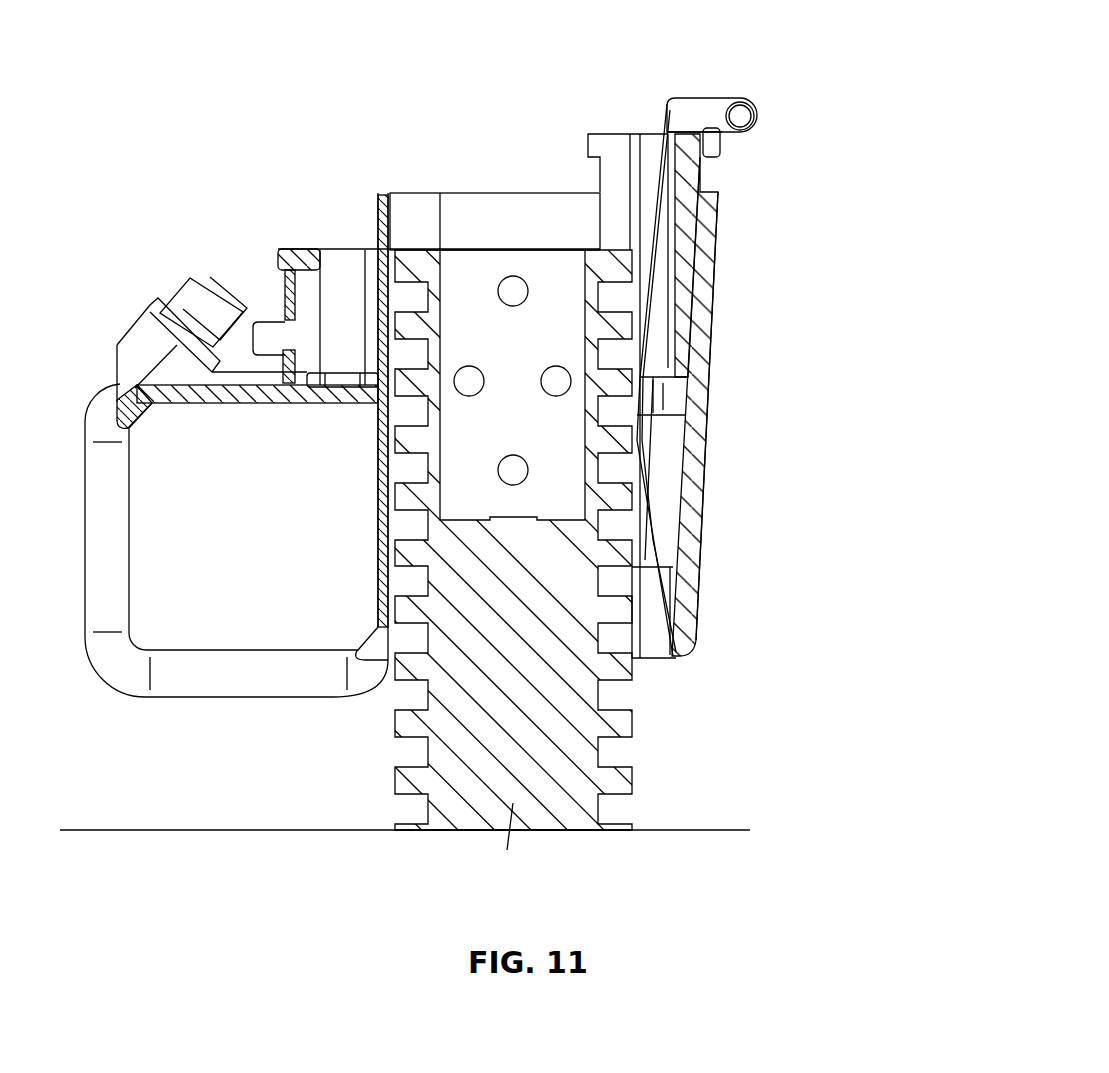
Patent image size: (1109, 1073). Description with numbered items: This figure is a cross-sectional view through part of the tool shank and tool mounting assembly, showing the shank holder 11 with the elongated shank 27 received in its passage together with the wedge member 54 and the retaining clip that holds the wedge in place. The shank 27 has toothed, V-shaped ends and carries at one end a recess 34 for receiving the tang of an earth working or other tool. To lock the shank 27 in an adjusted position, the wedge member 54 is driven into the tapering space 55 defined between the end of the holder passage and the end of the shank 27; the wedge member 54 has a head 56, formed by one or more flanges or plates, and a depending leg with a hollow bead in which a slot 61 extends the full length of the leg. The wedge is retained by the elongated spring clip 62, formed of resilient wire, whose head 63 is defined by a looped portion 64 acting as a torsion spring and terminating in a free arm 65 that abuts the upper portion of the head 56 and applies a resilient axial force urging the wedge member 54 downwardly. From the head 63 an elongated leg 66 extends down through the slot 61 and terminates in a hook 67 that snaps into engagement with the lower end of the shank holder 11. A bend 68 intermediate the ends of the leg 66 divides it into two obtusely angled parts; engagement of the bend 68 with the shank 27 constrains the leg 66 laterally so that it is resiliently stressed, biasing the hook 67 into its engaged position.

The shank holder 11 is at (700, 493).
The shank 27 is at (532, 743).
The recess 34 is at (510, 256).
The wedge member 54 is at (693, 207).
The tapering space 55 is at (700, 253).
The head 56 is at (595, 134).
The slot 61 is at (670, 293).
The spring clip 62 is at (717, 97).
The head 63 is at (758, 100).
The looped portion 64 is at (757, 118).
The free arm 65 is at (733, 133).
The leg 66 is at (645, 347).
The hook 67 is at (695, 660).
The bend 68 is at (645, 433).